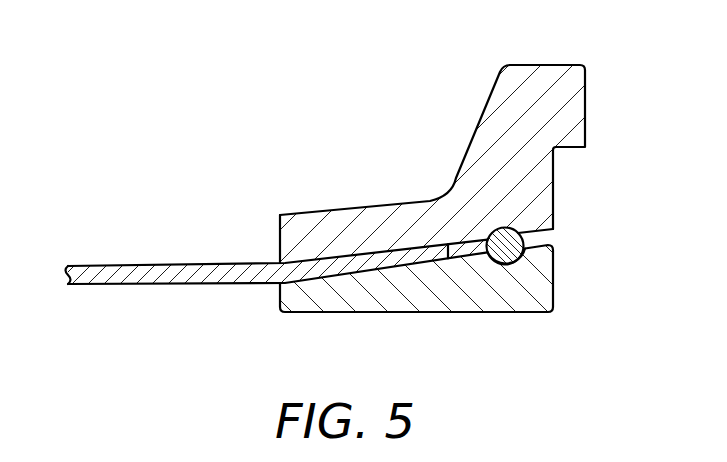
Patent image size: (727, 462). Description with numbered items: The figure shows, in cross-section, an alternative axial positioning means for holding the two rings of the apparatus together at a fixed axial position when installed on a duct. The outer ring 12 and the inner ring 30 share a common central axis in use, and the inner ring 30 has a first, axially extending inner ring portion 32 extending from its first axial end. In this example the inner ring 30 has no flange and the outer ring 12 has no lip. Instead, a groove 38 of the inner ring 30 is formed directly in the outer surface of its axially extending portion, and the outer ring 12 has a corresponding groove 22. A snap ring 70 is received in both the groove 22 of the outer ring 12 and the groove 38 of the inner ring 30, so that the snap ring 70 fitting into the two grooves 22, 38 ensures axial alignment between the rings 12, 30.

The outer ring 12 is at (543, 75).
The groove 22 is at (503, 226).
The inner ring 30 is at (495, 316).
The first inner ring portion 32 is at (395, 302).
The groove 38 is at (525, 272).
The snap ring 70 is at (523, 243).